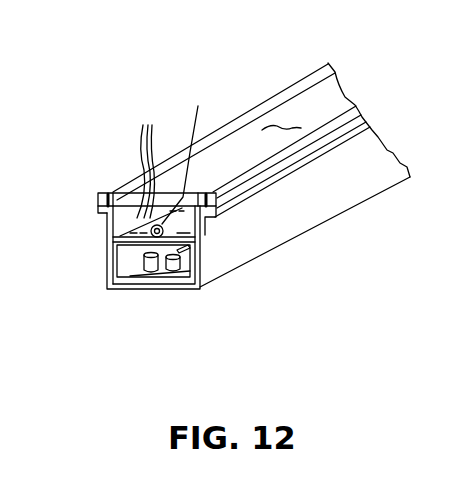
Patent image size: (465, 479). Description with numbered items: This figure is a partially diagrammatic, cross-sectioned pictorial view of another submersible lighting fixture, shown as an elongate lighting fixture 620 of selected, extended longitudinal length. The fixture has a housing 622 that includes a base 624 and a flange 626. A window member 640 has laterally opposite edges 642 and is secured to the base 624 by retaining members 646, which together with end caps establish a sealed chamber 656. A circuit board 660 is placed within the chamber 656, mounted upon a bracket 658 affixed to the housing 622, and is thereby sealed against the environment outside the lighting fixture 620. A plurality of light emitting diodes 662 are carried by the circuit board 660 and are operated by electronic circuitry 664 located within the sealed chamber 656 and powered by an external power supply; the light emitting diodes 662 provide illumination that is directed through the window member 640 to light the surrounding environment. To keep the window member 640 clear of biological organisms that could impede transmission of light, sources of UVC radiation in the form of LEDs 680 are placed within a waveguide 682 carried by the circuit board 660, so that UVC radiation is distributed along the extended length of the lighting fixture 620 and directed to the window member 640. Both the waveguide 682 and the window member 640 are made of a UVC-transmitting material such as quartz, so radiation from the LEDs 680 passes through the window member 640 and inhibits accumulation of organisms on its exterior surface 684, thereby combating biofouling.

The lighting fixture 620 is at (366, 200).
The housing 622 is at (324, 212).
The base 624 is at (200, 255).
The flange 626 is at (253, 196).
The window member 640 is at (326, 104).
The laterally opposite edges 642 is at (100, 203).
The retaining members 646 is at (292, 90).
The sealed chamber 656 is at (123, 220).
The bracket 658 is at (122, 253).
The circuit board 660 is at (120, 238).
The light emitting diodes 662 is at (152, 160).
The electronic circuitry 664 is at (152, 266).
The LEDs 680 is at (193, 147).
The waveguide 682 is at (168, 222).
The exterior surface 684 is at (286, 118).